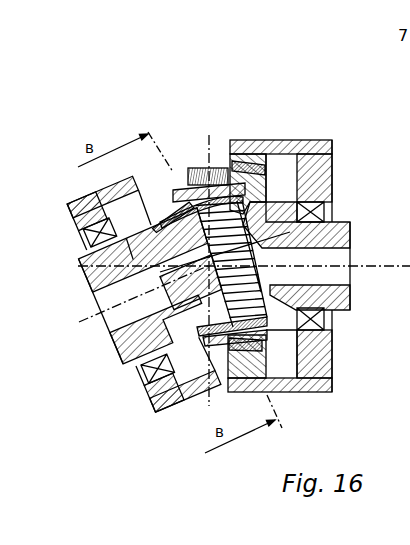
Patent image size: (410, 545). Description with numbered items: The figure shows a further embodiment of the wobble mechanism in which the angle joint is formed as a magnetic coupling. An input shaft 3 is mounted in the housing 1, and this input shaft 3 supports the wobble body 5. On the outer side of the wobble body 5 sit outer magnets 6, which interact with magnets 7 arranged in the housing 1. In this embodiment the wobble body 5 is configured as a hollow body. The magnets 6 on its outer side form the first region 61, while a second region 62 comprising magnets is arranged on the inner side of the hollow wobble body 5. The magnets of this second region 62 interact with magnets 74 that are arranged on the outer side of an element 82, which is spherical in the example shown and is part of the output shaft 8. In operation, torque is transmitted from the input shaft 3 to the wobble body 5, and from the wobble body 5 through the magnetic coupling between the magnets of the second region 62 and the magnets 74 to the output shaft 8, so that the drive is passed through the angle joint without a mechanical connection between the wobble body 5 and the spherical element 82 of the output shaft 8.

The housing 1 is at (257, 142).
The input shaft 3 is at (342, 303).
The wobble body 5 is at (181, 195).
The outer magnets 6 is at (228, 362).
The magnets 7 is at (290, 140).
The output shaft 8 is at (132, 335).
The first region 61 is at (218, 170).
The second region 62 is at (222, 247).
The magnets 74 is at (163, 197).
The element 82 is at (150, 226).